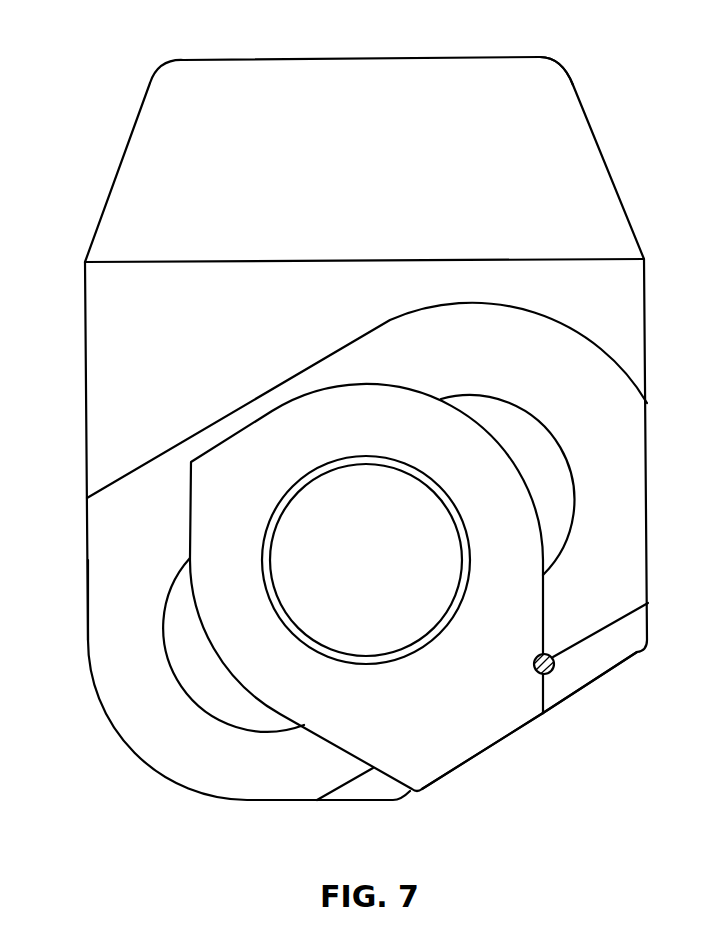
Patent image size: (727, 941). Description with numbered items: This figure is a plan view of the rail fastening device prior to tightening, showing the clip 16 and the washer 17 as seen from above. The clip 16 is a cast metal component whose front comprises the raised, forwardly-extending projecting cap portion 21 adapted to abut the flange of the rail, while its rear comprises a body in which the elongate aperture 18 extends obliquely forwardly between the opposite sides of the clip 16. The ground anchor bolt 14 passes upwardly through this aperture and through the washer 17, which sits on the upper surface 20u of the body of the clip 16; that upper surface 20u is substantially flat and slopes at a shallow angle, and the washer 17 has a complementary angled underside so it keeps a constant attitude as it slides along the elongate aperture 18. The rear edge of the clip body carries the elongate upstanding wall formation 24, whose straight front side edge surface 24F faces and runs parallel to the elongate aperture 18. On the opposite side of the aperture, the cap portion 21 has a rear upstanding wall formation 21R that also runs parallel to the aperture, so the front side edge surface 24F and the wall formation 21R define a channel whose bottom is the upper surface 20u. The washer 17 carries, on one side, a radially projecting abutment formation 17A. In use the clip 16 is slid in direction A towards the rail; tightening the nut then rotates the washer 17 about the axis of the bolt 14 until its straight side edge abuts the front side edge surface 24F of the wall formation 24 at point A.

The ground anchor bolt 14 is at (367, 572).
The clip 16 is at (596, 139).
The washer 17 is at (445, 773).
The radially projecting abutment formation 17A is at (191, 460).
The elongate aperture 18 is at (180, 653).
The upper surface of the body 20u is at (118, 615).
The projecting cap portion 21 is at (557, 93).
The rear upstanding wall formation 21R is at (150, 460).
The elongate upstanding wall formation 24 is at (618, 643).
The front side edge surface 24F is at (627, 613).
The direction A / point A is at (553, 672).